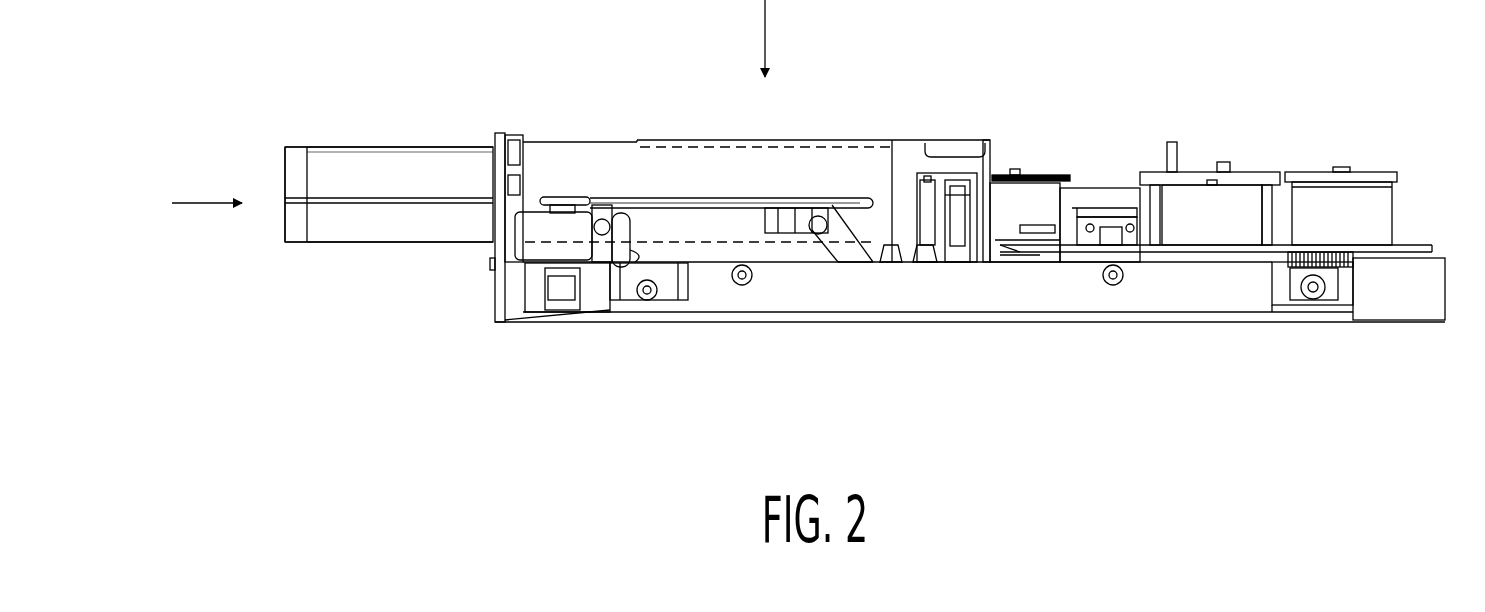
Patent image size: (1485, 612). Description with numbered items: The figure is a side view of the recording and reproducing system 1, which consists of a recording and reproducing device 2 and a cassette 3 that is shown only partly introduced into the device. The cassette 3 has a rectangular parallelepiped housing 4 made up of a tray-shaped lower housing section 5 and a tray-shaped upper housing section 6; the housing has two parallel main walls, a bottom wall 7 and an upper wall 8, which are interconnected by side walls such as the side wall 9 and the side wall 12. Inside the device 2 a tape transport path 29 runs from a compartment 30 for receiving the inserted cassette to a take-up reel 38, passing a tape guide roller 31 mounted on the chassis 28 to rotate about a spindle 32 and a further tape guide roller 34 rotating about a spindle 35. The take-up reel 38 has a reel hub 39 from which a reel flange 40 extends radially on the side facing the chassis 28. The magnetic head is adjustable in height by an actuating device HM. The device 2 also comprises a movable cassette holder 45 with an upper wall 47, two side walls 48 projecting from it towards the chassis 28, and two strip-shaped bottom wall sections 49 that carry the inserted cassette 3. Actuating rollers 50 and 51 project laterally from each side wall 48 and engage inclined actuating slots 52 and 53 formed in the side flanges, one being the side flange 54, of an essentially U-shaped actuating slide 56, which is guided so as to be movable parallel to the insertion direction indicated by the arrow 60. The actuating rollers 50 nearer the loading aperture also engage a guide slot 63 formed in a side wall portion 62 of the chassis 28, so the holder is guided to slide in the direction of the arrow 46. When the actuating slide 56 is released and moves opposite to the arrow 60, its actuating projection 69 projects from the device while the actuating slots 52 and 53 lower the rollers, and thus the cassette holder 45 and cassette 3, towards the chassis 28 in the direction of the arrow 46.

The recording and reproducing system 1 is at (460, 340).
The recording and reproducing device 2 is at (1238, 118).
The cassette 3 is at (330, 125).
The housing 4 is at (283, 198).
The lower housing section 5 is at (285, 243).
The upper housing section 6 is at (288, 150).
The bottom wall 7 is at (355, 243).
The upper wall 8 is at (385, 147).
The side wall 9 is at (415, 167).
The side wall 12 is at (287, 176).
The chassis 28 is at (1105, 322).
The tape transport path 29 is at (1083, 185).
The compartment 30 is at (995, 160).
The tape guide roller 31 is at (1035, 185).
The spindle 32 is at (1000, 168).
The further tape guide roller 34 is at (1383, 210).
The spindle 35 is at (1340, 165).
The take-up reel 38 is at (1270, 240).
The reel hub 39 is at (1190, 165).
The reel flange 40 is at (1415, 242).
The movable cassette holder 45 is at (585, 140).
The arrow 46 is at (765, 40).
The upper wall 47 is at (790, 145).
The side wall 48 is at (695, 160).
The bottom wall section 49 is at (695, 262).
The actuating roller 50 is at (602, 218).
The actuating roller 51 is at (817, 215).
The actuating slot 52 is at (630, 243).
The actuating slot 53 is at (860, 225).
The side flange 54 is at (727, 210).
The actuating slide 56 is at (900, 160).
The arrow 60 is at (210, 205).
The side wall portion 62 is at (580, 233).
The guide slot 63 is at (592, 300).
The actuating projection 69 is at (490, 265).
The actuating device HM is at (1133, 200).